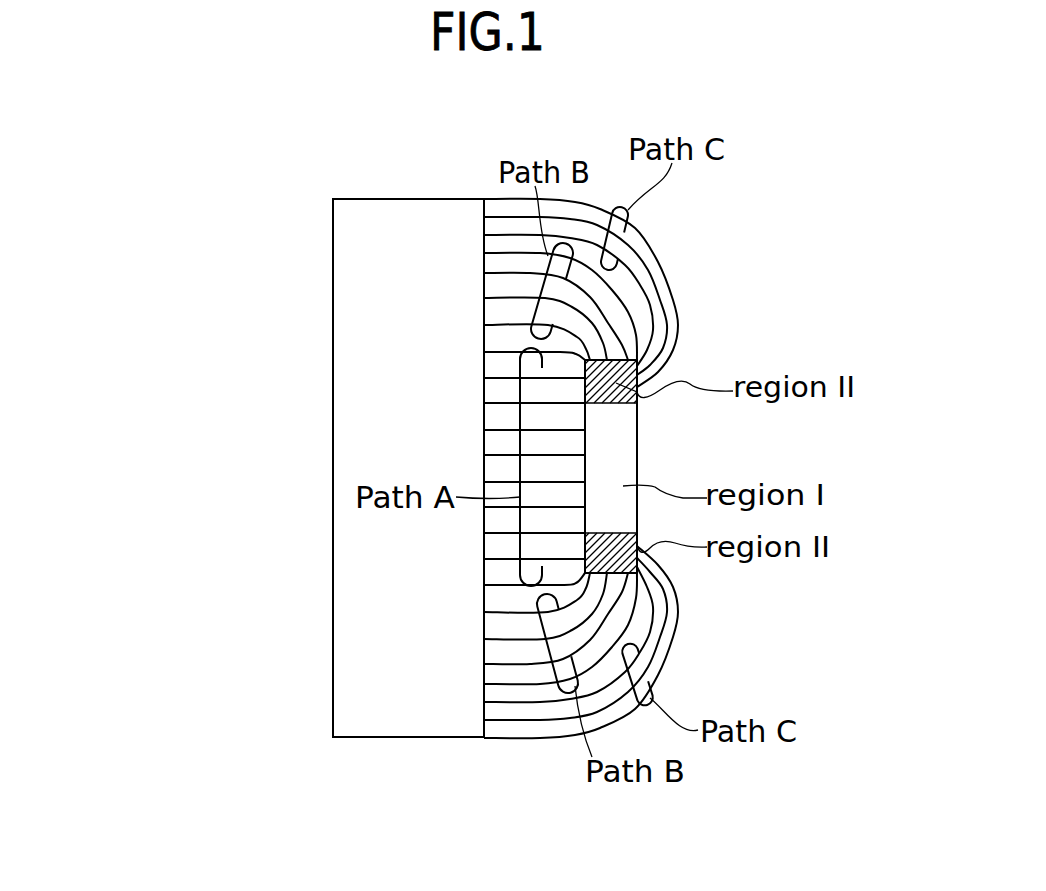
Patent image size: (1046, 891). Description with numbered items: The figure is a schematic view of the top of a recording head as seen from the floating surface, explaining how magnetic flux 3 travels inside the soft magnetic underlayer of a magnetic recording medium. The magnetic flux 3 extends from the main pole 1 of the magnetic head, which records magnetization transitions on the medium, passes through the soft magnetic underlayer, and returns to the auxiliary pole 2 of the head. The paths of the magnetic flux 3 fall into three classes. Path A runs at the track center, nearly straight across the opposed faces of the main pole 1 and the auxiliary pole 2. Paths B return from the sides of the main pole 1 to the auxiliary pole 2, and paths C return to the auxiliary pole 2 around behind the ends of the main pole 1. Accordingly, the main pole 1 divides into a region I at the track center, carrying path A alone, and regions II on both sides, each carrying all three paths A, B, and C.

The main pole 1 is at (637, 445).
The auxiliary pole 2 is at (358, 331).
The magnetic flux 3 is at (676, 249).